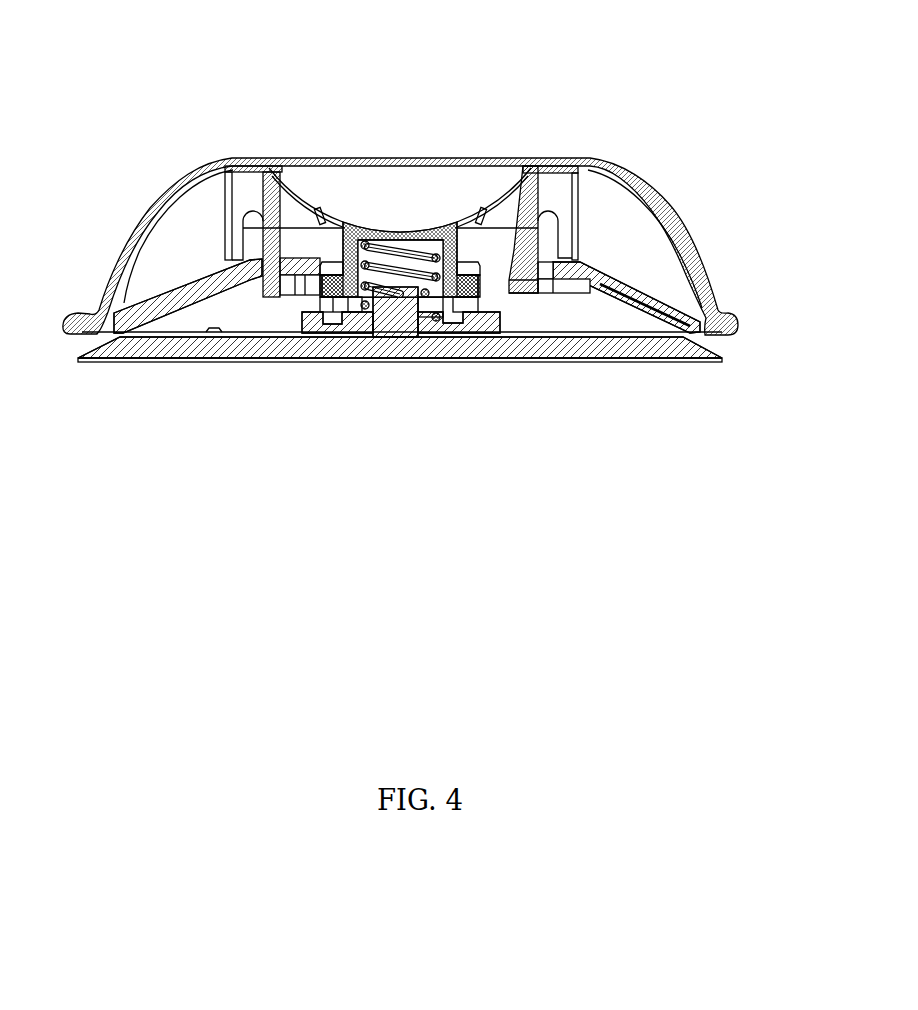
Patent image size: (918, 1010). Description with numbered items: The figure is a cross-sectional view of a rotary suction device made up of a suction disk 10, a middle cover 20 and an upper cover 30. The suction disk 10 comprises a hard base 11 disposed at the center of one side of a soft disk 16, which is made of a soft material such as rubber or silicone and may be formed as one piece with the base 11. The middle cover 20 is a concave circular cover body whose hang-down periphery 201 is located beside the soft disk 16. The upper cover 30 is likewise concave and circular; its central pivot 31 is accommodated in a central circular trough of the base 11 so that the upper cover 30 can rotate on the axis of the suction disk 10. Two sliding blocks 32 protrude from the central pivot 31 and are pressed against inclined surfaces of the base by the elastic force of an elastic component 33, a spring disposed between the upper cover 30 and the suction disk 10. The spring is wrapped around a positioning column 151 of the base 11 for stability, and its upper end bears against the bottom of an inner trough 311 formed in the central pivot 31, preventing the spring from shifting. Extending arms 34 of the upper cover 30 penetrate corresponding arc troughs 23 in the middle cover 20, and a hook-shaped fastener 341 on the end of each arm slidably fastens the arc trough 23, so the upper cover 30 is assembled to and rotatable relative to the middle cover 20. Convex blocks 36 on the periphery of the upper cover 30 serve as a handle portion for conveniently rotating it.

The suction disk 10 is at (682, 376).
The base 11 is at (488, 332).
The soft disk 16 is at (197, 340).
The positioning column 151 is at (380, 327).
The middle cover 20 is at (156, 286).
The hang-down periphery 201 is at (688, 313).
The arc trough 23 is at (548, 188).
The upper cover 30 is at (684, 219).
The central pivot 31 is at (447, 230).
The inner trough 311 is at (428, 246).
The sliding block 32 is at (335, 282).
The elastic component 33 is at (378, 226).
The extending arm 34 is at (553, 178).
The fastener 341 is at (533, 294).
The convex block 36 is at (683, 268).